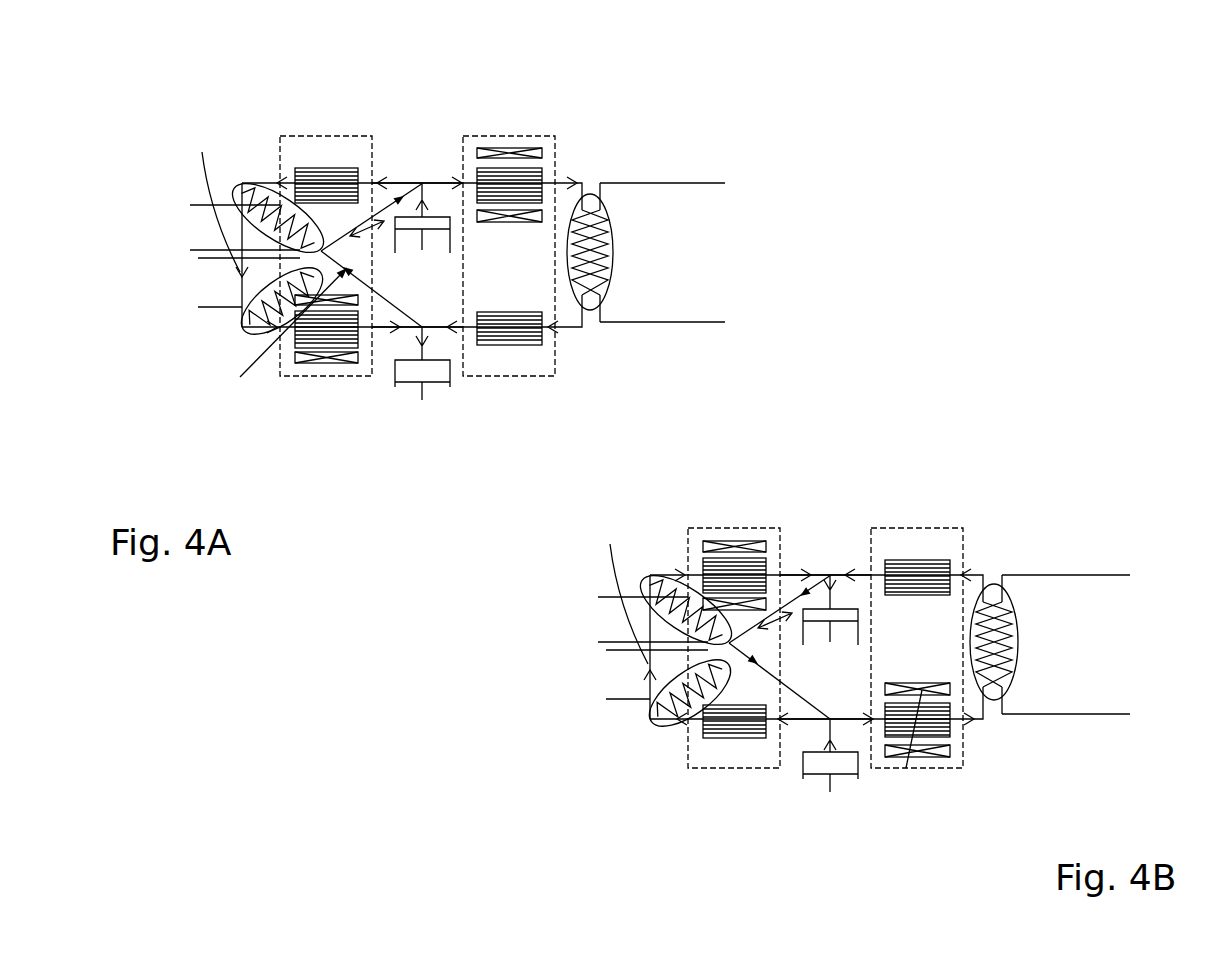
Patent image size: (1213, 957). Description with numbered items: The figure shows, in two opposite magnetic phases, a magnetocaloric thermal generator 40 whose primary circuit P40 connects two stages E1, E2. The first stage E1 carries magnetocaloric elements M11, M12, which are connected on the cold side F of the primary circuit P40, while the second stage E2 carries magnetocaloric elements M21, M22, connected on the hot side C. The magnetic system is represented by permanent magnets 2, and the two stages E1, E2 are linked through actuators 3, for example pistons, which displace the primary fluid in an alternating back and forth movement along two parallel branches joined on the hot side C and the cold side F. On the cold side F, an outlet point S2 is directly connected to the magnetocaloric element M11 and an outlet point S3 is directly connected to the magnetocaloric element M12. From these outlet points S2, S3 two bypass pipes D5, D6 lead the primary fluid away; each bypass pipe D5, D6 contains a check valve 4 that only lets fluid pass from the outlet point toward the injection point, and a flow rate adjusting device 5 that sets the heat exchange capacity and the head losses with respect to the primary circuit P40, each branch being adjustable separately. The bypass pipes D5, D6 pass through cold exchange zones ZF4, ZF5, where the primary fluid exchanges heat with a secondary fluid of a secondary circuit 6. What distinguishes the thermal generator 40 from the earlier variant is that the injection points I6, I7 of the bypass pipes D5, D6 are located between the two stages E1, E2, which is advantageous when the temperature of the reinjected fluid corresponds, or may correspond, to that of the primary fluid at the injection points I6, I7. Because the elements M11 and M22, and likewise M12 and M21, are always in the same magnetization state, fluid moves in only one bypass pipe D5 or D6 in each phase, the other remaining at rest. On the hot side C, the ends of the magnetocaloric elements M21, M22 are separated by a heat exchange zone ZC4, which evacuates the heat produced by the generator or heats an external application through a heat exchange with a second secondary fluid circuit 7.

In FIG. 4A, the magnetocaloric thermal generator 40 is at (997, 161).
In FIG. 4A, the cold side F is at (181, 237).
In FIG. 4B, the cold side F is at (624, 611).
In FIG. 4A, the secondary circuit 6 is at (217, 196).
In FIG. 4B, the secondary circuit 6 is at (627, 588).
In FIG. 4A, the second secondary fluid circuit 7 is at (697, 183).
In FIG. 4B, the second secondary fluid circuit 7 is at (1081, 625).
In FIG. 4B, the permanent magnets 2 is at (931, 701).
In FIG. 4A, the actuators 3 is at (420, 228).
In FIG. 4B, the actuators 3 is at (831, 724).
In FIG. 4A, the check valve 4 is at (398, 199).
In FIG. 4A, the flow rate adjusting device 5 is at (368, 252).
In FIG. 4B, the flow rate adjusting device 5 is at (788, 641).
In FIG. 4A, the outlet point S2 is at (240, 186).
In FIG. 4B, the outlet point S2 is at (685, 578).
In FIG. 4A, the outlet point S3 is at (242, 327).
In FIG. 4B, the outlet point S3 is at (656, 706).
In FIG. 4A, the cold exchange zone ZF4 is at (297, 210).
In FIG. 4B, the cold exchange zone ZF4 is at (740, 544).
In FIG. 4A, the cold exchange zone ZF5 is at (240, 286).
In FIG. 4B, the cold exchange zone ZF5 is at (641, 693).
In FIG. 4A, the heat exchange zone ZC4 is at (613, 252).
In FIG. 4B, the heat exchange zone ZC4 is at (1050, 642).
In FIG. 4A, the stage E1 is at (293, 377).
In FIG. 4B, the stage E1 is at (717, 691).
In FIG. 4A, the stage E2 is at (492, 377).
In FIG. 4B, the stage E2 is at (909, 690).
In FIG. 4A, the magnetocaloric element M11 is at (348, 168).
In FIG. 4B, the magnetocaloric element M11 is at (768, 553).
In FIG. 4A, the magnetocaloric element M12 is at (305, 350).
In FIG. 4B, the magnetocaloric element M12 is at (750, 763).
In FIG. 4A, the magnetocaloric element M21 is at (512, 168).
In FIG. 4B, the magnetocaloric element M21 is at (940, 541).
In FIG. 4A, the magnetocaloric element M22 is at (507, 333).
In FIG. 4B, the magnetocaloric element M22 is at (934, 758).
In FIG. 4A, the bypass pipe D5 is at (408, 185).
In FIG. 4B, the bypass pipe D5 is at (781, 589).
In FIG. 4A, the bypass pipe D6 is at (373, 272).
In FIG. 4B, the bypass pipe D6 is at (779, 758).
In FIG. 4A, the injection point I6 is at (423, 182).
In FIG. 4B, the injection point I6 is at (825, 495).
In FIG. 4A, the injection point I7 is at (422, 327).
In FIG. 4B, the injection point I7 is at (844, 682).
In FIG. 4A, the primary circuit P40 is at (440, 183).
In FIG. 4B, the primary circuit P40 is at (872, 534).
In FIG. 4A, the hot side C is at (661, 184).
In FIG. 4B, the hot side C is at (1081, 597).